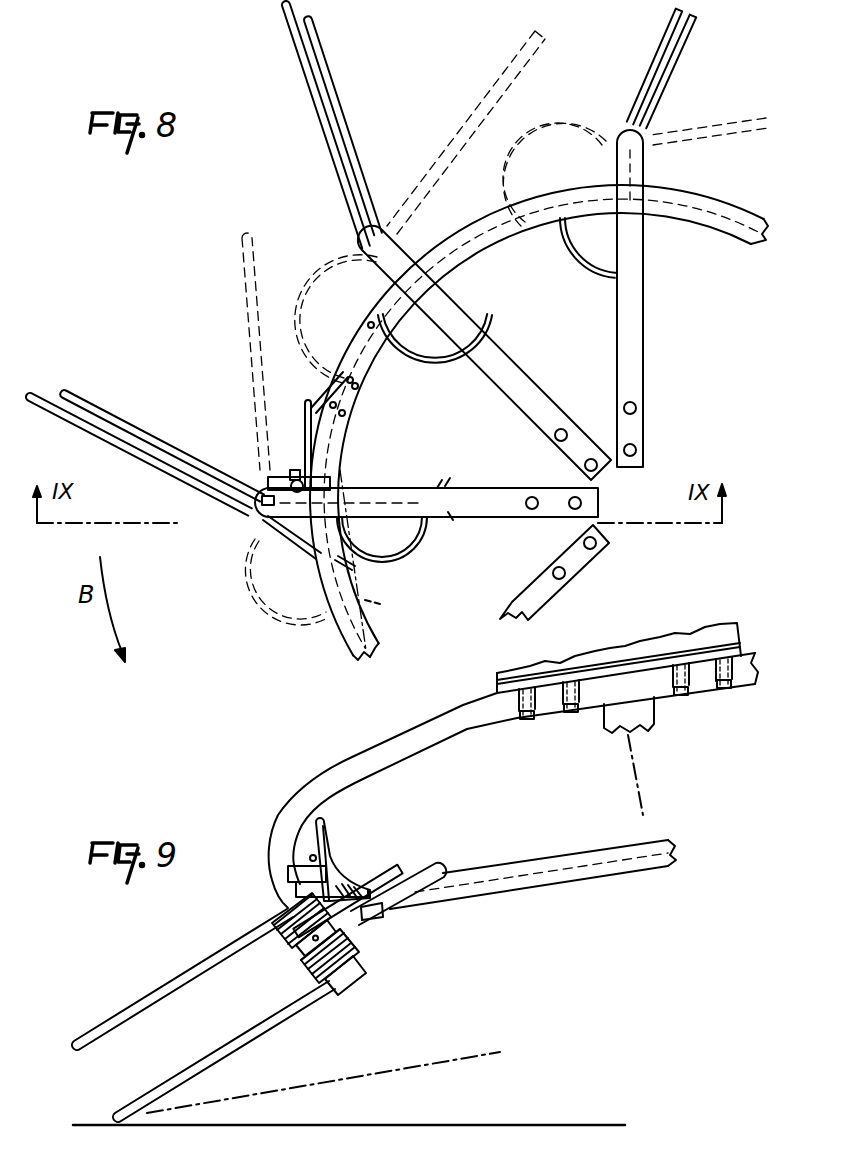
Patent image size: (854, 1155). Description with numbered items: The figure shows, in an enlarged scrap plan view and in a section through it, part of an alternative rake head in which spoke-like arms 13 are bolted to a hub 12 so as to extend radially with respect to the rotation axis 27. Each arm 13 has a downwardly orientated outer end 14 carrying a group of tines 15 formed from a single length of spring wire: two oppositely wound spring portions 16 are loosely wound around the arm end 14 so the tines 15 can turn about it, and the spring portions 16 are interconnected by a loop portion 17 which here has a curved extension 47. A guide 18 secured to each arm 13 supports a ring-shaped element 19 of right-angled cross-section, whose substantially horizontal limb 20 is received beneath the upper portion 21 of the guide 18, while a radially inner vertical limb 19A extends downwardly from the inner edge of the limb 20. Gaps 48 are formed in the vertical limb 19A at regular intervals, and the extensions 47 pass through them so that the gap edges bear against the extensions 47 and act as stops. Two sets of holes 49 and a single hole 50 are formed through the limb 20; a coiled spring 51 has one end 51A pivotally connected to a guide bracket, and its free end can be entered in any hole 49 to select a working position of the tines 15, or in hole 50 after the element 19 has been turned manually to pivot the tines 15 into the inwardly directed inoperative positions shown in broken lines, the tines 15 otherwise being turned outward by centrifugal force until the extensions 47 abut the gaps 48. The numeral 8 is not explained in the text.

In FIG. 9, the support member 8 is at (650, 716).
In FIG. 9, the hub 12 is at (653, 665).
In FIG. 8, the spoke-like arm 13 is at (571, 557).
In FIG. 9, the spoke-like arm 13 is at (446, 724).
In FIG. 9, the arm end 14 is at (338, 985).
In FIG. 8, the tines 15 is at (292, 47).
In FIG. 9, the tines 15 is at (160, 1087).
In FIG. 9, the spring portion 16 is at (308, 948).
In FIG. 8, the loop portion 17 is at (300, 550).
In FIG. 9, the loop portion 17 is at (360, 932).
In FIG. 8, the guide 18 is at (266, 501).
In FIG. 8, the ring-shaped element 19 is at (712, 238).
In FIG. 9, the ring-shaped element 19 is at (597, 856).
In FIG. 8, the radially inner substantially vertical limb 19A is at (378, 645).
In FIG. 9, the radially inner substantially vertical limb 19A is at (572, 880).
In FIG. 8, the substantially horizontal limb 20 is at (351, 650).
In FIG. 9, the substantially horizontal limb 20 is at (541, 860).
In FIG. 8, the upper portion 21 is at (268, 480).
In FIG. 9, the upper portion 21 is at (288, 876).
In FIG. 9, the axis 27 is at (645, 793).
In FIG. 8, the curved extension 47 is at (458, 370).
In FIG. 9, the curved extension 47 is at (428, 860).
In FIG. 8, the gap 48 is at (352, 568).
In FIG. 9, the gap 48 is at (382, 913).
In FIG. 8, the holes 49 is at (360, 394).
In FIG. 8, the single additional hole 50 is at (368, 324).
In FIG. 8, the coiled spring 51 is at (306, 406).
In FIG. 9, the coiled spring 51 is at (326, 832).
In FIG. 8, the spring end 51A is at (284, 477).
In FIG. 9, the spring end 51A is at (310, 857).